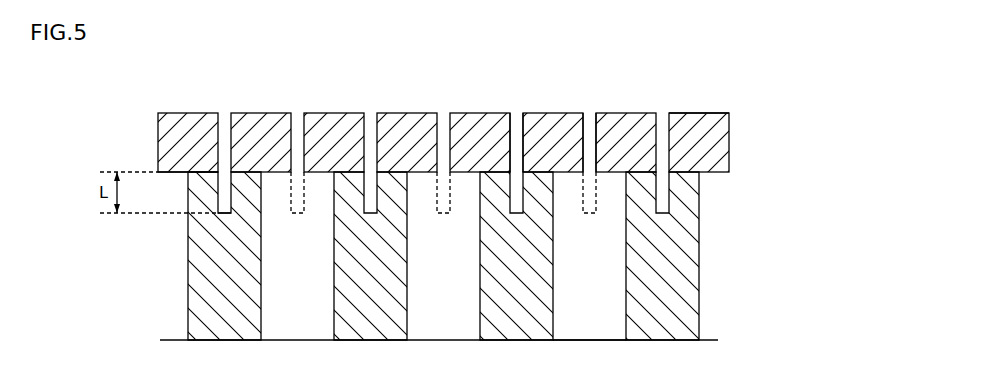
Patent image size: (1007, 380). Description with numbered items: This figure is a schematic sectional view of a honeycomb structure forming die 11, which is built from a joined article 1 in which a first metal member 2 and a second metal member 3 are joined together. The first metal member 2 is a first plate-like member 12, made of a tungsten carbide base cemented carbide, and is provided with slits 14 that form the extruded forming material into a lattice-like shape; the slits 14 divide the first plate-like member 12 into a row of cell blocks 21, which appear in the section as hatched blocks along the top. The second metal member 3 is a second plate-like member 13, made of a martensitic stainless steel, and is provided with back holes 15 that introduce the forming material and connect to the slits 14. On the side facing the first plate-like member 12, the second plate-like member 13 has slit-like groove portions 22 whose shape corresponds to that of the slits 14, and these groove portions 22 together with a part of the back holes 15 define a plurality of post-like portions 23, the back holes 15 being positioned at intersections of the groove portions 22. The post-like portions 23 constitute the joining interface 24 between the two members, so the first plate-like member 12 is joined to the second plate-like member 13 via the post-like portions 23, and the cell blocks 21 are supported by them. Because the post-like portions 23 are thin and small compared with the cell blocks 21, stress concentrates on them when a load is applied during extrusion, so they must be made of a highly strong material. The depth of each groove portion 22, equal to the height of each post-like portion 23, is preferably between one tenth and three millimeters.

The joined article 1 is at (770, 138).
The first metal member 2 is at (702, 150).
The second metal member 3 is at (699, 227).
The honeycomb structure forming die 11 is at (630, 82).
The first plate-like member 12 is at (706, 131).
The second plate-like member 13 is at (699, 264).
The slit 14 is at (516, 120).
The back hole 15 is at (603, 290).
The cell block 21 is at (340, 112).
The groove portion 22 is at (217, 208).
The post-like portion 23 is at (222, 209).
The joining interface 24 is at (199, 167).